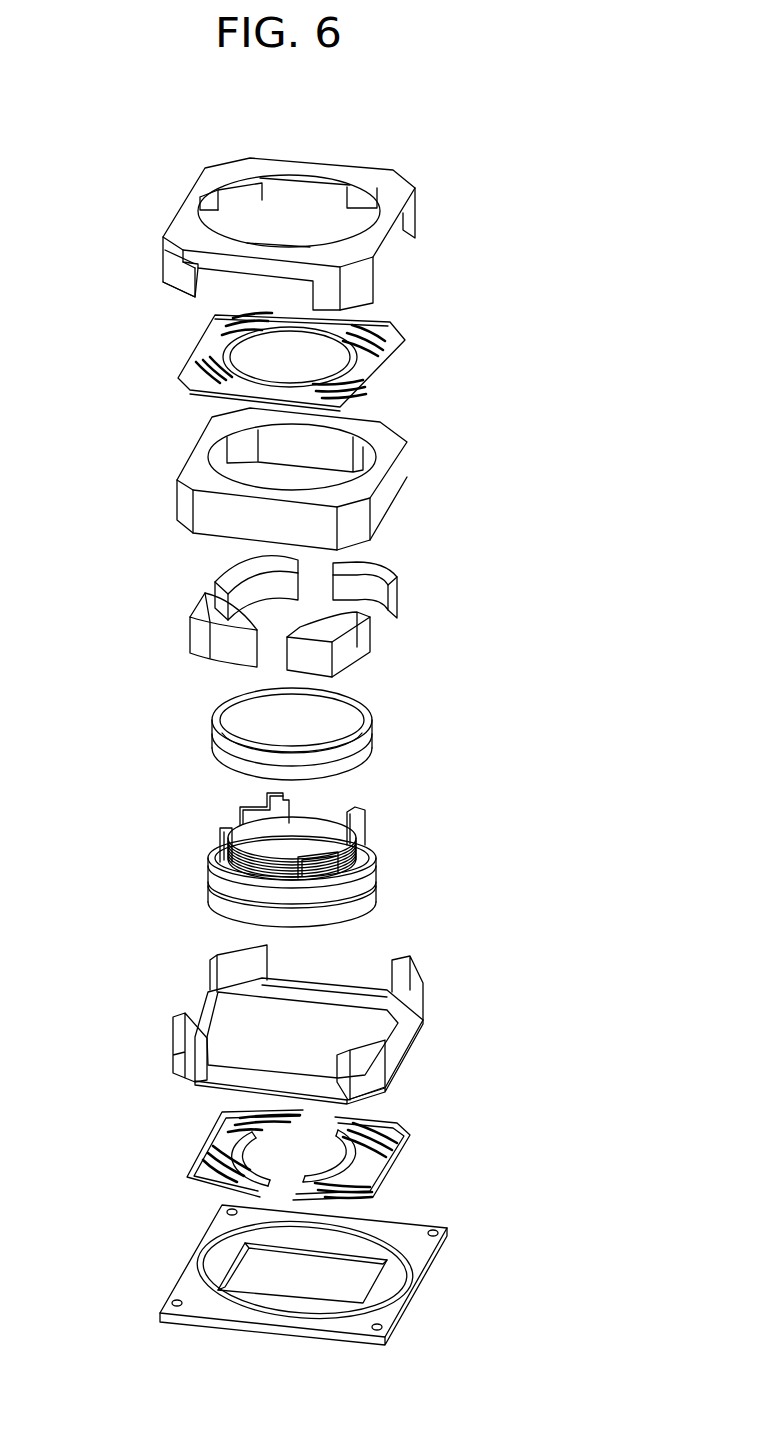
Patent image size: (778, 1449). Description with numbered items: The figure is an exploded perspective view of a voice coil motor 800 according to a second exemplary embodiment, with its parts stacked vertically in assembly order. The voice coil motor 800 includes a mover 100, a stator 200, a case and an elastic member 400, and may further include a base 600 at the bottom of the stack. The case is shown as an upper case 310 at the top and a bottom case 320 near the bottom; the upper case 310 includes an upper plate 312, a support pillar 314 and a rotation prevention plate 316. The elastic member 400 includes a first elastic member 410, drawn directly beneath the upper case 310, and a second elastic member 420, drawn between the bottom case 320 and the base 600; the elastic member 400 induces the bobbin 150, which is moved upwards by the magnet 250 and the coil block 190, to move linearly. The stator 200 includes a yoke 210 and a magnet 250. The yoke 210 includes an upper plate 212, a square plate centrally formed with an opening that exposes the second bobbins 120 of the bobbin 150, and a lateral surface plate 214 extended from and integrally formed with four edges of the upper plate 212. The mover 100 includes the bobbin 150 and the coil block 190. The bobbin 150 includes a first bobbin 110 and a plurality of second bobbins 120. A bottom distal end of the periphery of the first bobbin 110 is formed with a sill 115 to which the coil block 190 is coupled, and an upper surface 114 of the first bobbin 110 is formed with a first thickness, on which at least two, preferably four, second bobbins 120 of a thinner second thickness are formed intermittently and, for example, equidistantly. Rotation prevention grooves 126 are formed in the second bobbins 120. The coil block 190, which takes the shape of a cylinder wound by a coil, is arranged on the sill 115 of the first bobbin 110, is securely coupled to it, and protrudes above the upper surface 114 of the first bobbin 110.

The voice coil motor 800 is at (498, 130).
The upper case 310 is at (433, 243).
The upper plate 312 is at (199, 204).
The support pillar 314 is at (173, 262).
The rotation prevention plate 316 is at (242, 195).
The elastic member 400 is at (423, 338).
The first elastic member 410 is at (177, 377).
The stator 200 is at (500, 418).
The yoke 210 is at (168, 497).
The upper plate 212 is at (382, 438).
The lateral surface plate 214 is at (397, 475).
The magnet 250 is at (188, 630).
The mover 100 is at (530, 695).
The coil block 190 is at (378, 727).
The second bobbins 120 is at (362, 825).
The rotation prevention grooves 126 is at (316, 808).
The bobbin 150 is at (385, 865).
The first bobbin 110 is at (358, 882).
The upper surface 114 is at (240, 868).
The sill 115 is at (340, 907).
The bottom case 320 is at (430, 1020).
The second elastic member 420 is at (183, 1135).
The base 600 is at (453, 1228).